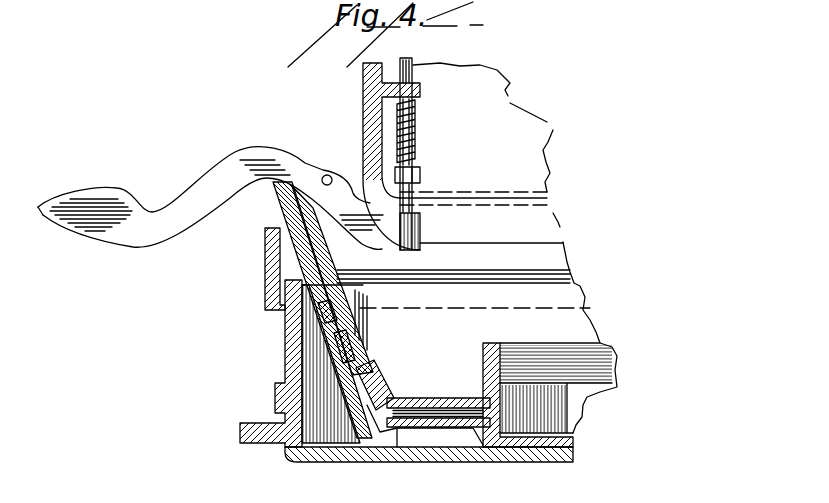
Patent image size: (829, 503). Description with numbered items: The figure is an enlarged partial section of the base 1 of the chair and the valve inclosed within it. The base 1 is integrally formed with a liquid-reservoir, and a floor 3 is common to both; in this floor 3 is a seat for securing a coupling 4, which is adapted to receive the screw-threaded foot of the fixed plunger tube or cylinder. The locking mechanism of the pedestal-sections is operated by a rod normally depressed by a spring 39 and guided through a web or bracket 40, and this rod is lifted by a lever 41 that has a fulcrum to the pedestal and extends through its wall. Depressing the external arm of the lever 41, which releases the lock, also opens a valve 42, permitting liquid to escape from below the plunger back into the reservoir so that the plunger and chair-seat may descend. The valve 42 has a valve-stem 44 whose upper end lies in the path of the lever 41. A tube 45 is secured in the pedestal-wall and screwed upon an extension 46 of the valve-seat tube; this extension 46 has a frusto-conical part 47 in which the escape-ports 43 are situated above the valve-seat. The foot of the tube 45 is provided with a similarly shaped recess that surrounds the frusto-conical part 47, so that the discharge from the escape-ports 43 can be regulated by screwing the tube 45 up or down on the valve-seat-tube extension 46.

The base 1 is at (333, 441).
The floor 3 is at (412, 463).
The coupling 4 is at (487, 351).
The spring 39 is at (416, 133).
The bracket 40 is at (420, 90).
The lever 41 is at (90, 182).
The valve 42 is at (400, 392).
The escape-ports 43 is at (377, 367).
The valve-stem 44 is at (262, 222).
The tube 45 is at (268, 207).
The extension of the valve-seat tube 46 is at (357, 320).
The frusto-conical part 47 is at (381, 323).